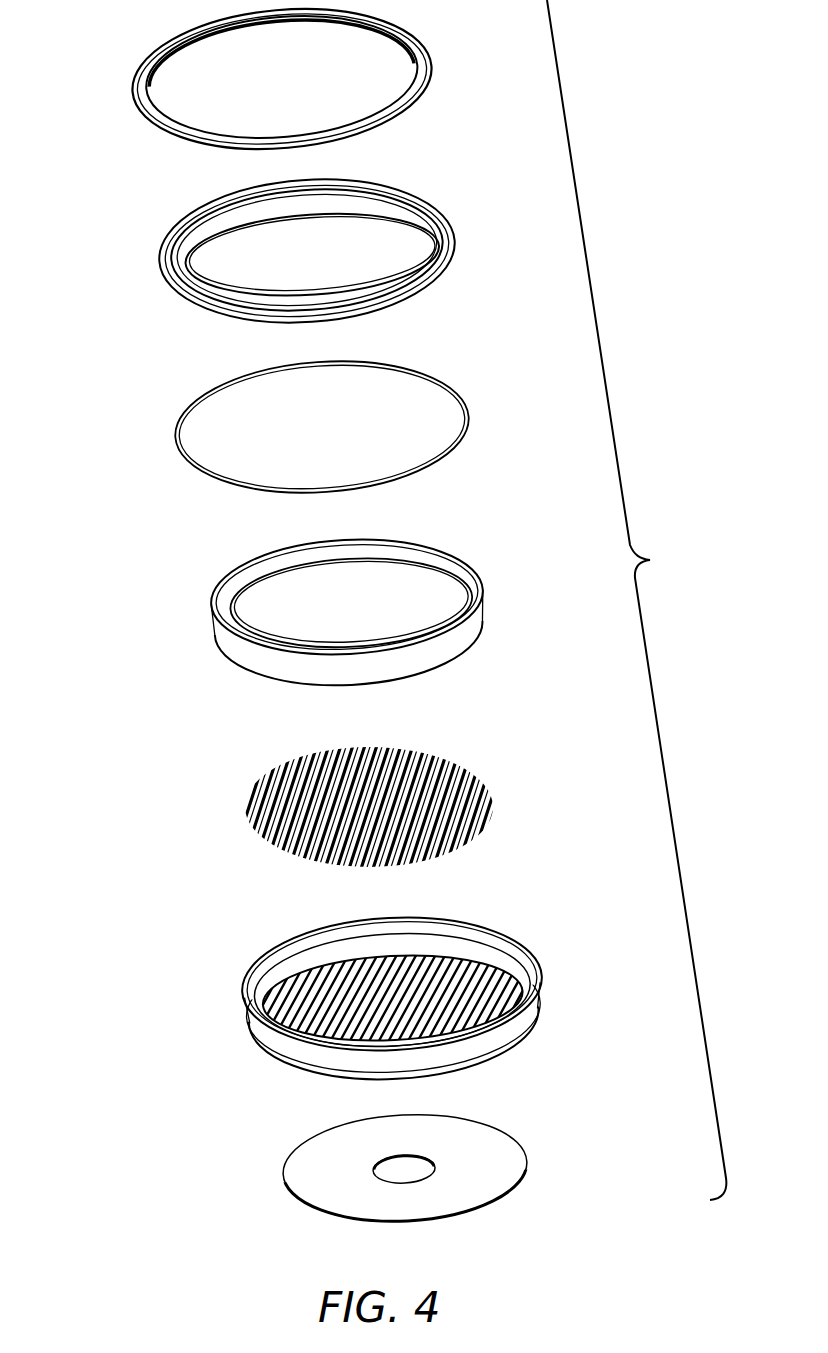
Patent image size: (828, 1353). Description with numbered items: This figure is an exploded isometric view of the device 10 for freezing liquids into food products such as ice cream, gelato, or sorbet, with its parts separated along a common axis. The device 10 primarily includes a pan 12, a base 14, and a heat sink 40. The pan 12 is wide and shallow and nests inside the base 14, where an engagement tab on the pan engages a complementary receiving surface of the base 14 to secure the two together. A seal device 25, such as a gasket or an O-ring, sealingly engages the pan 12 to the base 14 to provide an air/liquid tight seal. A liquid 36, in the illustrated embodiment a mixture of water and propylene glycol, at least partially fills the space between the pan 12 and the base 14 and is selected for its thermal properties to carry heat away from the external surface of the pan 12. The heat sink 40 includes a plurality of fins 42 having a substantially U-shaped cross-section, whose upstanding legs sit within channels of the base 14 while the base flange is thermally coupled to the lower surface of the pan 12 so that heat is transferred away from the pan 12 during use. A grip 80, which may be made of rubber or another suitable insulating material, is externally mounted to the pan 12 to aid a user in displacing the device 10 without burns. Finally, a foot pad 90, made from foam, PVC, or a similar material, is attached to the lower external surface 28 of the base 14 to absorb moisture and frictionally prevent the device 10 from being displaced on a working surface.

The device 10 is at (636, 600).
The grip 80 is at (133, 77).
The pan 12 is at (160, 254).
The seal device 25 is at (177, 427).
The liquid 36 is at (212, 600).
The heat sink 40 is at (367, 807).
The fins 42 is at (250, 802).
The base 14 is at (402, 1003).
The lower external surface 28 is at (278, 1057).
The foot pad 90 is at (512, 1157).